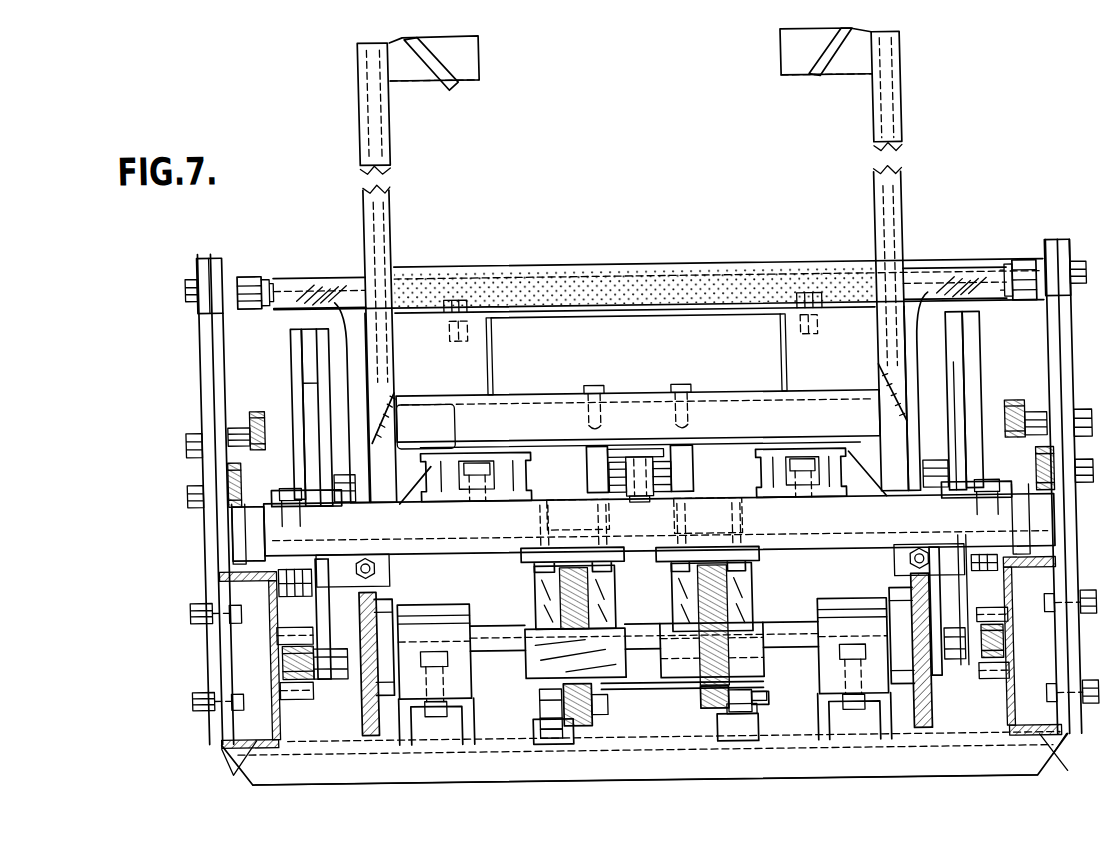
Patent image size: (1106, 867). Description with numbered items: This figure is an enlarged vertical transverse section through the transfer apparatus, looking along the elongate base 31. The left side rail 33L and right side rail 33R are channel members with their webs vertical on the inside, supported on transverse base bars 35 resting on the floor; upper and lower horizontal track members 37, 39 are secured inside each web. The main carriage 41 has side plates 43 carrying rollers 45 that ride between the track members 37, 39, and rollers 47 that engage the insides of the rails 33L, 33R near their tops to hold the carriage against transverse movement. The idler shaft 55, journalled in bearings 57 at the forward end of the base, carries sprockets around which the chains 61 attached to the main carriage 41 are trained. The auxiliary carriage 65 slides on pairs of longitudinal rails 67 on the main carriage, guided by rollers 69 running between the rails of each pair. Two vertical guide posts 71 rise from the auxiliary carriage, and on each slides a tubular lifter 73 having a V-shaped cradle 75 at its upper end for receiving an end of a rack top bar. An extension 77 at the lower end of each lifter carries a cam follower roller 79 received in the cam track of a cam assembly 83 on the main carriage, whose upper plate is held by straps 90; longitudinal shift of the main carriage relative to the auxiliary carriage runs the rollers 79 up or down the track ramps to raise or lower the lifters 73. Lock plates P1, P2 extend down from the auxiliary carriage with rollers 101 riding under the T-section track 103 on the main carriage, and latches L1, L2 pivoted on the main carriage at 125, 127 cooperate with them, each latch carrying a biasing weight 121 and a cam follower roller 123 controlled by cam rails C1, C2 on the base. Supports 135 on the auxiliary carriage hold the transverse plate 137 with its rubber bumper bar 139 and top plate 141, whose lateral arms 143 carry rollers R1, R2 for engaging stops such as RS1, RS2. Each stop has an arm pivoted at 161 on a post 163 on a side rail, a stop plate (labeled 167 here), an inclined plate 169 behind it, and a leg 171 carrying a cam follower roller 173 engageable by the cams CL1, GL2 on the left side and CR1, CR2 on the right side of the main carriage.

The base 31 is at (357, 783).
The left side rail 33L is at (229, 773).
The right side rail 33R is at (1068, 757).
The transverse base bars 35 is at (603, 771).
The upper horizontal track member 37 is at (284, 629).
The lower horizontal track member 39 is at (280, 710).
The main carriage 41 is at (449, 554).
The side plates 43 is at (320, 590).
The rollers 45 is at (293, 682).
The rollers 47 is at (1005, 605).
The idler shaft 55 is at (504, 630).
The bearings 57 is at (451, 601).
The chains 61 is at (364, 731).
The auxiliary carriage 65 is at (570, 392).
The rails 67 is at (842, 482).
The rollers 69 is at (480, 489).
The vertical guide posts 71 is at (371, 178).
The lifter 73 is at (368, 92).
The V-shaped cradle 75 is at (461, 80).
The extension 77 is at (633, 391).
The cam follower roller 79 is at (336, 469).
The cam assembly 83 is at (291, 341).
The straps 90 is at (298, 381).
The rollers 101 is at (632, 498).
The T-section track 103 is at (640, 451).
The biasing weight 121 is at (608, 686).
The cam follower roller 123 is at (537, 705).
The pivot of latch L1 125 is at (539, 592).
The pivot of latch L2 127 is at (739, 598).
The supports 135 is at (497, 342).
The transverse plate 137 is at (638, 318).
The rubber bumper bar 139 is at (684, 278).
The top plate 141 is at (549, 266).
The arms 143 is at (322, 280).
The pivot 161 is at (189, 278).
The post 163 is at (202, 548).
The collar 167 is at (266, 268).
The inclined plate 169 is at (1008, 264).
The leg 171 is at (207, 367).
The cam follower roller 173 is at (271, 421).
The roller R1 is at (247, 268).
The roller R2 is at (1027, 268).
The stop RS1 is at (214, 253).
The stop RS2 is at (1061, 246).
The first cam CL1 is at (258, 414).
The gear GL2 is at (236, 503).
The first cam CR1 is at (1011, 411).
The second cam CR2 is at (1034, 469).
The left vertical lock plate P1 is at (584, 455).
The right vertical lock plate P2 is at (694, 455).
The latch L1 is at (585, 702).
The latch L2 is at (698, 706).
The cam rail C1 is at (523, 722).
The cam rail C2 is at (753, 723).